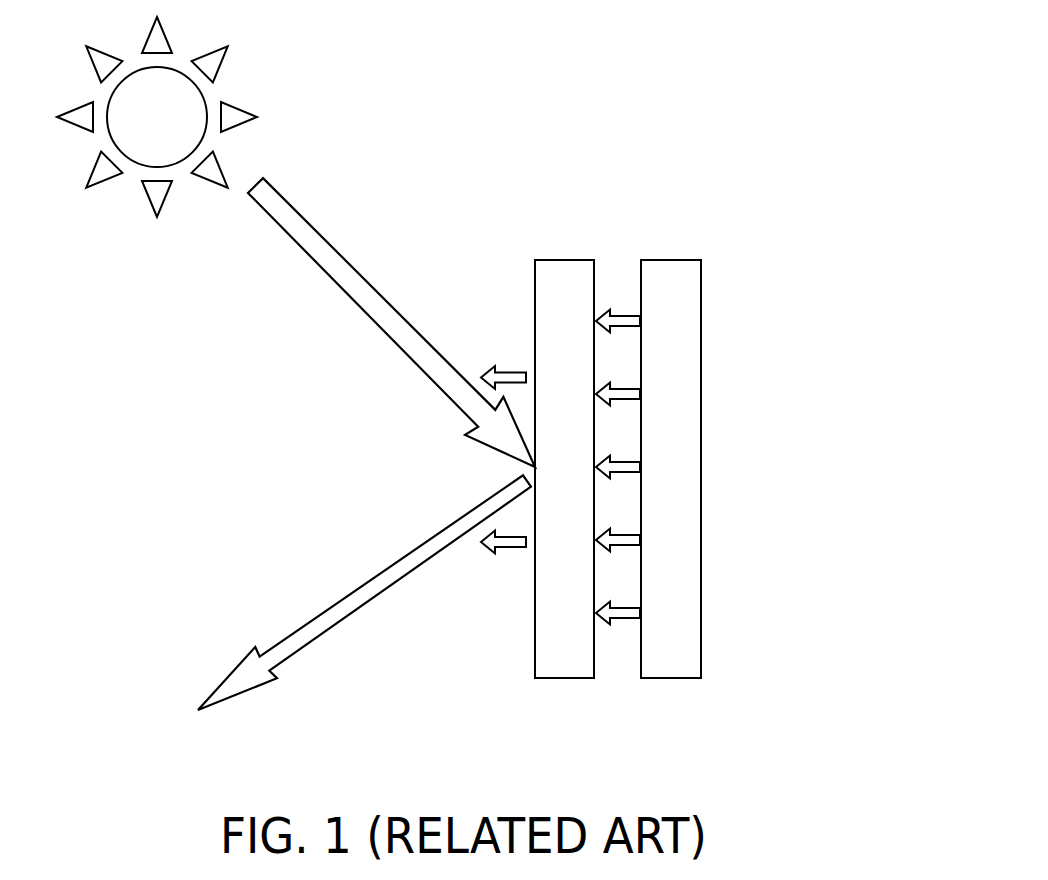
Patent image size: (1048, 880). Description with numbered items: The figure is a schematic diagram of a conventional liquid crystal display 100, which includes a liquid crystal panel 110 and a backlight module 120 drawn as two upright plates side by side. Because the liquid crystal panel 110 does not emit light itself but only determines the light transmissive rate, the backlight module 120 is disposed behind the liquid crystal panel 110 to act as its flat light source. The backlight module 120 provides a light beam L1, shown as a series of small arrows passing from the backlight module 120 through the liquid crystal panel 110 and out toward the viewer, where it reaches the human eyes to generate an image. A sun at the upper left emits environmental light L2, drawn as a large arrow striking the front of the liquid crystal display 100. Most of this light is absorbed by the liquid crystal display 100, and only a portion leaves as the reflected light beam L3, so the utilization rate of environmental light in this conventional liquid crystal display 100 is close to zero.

The liquid crystal display 100 is at (772, 522).
The liquid crystal panel 110 is at (567, 678).
The backlight module 120 is at (668, 678).
The light beam L1 is at (510, 548).
The environmental light L2 is at (363, 277).
The reflected light beam L3 is at (340, 620).